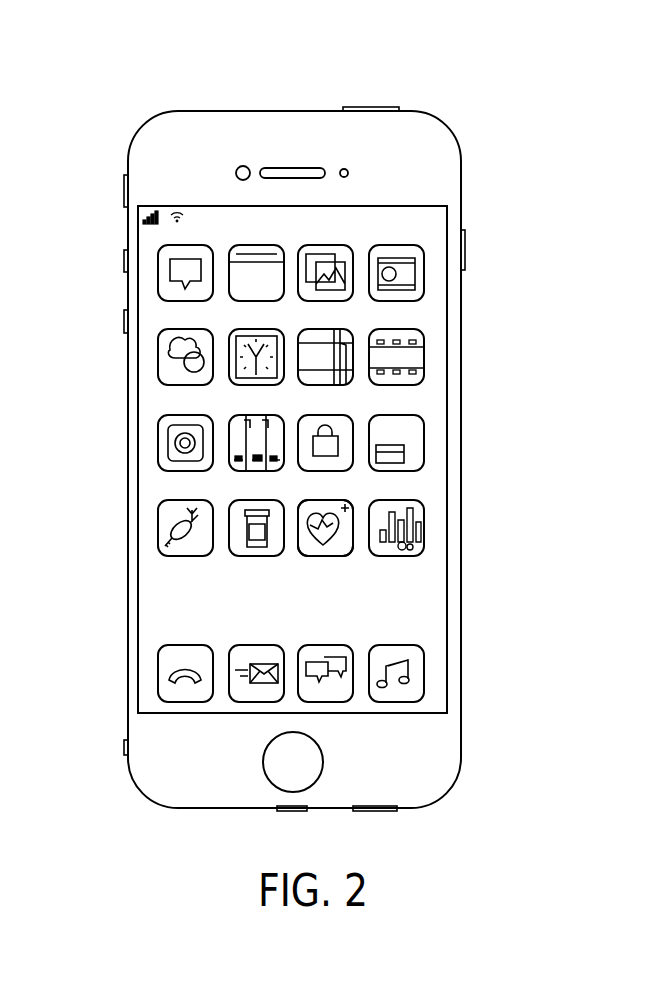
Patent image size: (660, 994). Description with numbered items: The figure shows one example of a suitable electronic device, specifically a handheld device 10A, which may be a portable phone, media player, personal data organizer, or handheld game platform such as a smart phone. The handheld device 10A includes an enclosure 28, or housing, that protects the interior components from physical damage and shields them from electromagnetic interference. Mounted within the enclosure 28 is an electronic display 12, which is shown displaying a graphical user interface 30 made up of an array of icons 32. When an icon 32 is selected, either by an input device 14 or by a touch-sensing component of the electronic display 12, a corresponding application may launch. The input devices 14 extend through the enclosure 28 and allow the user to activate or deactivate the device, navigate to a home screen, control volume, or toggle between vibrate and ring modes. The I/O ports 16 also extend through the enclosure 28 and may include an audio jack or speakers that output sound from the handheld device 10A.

The handheld device 10A is at (116, 97).
The electronic display 12 is at (447, 591).
The input devices 14 is at (370, 107).
The input/output (I/O) ports 16 is at (181, 810).
The enclosure 28 is at (461, 191).
The graphical user interface (GUI) 30 is at (425, 399).
The icons 32 is at (325, 557).